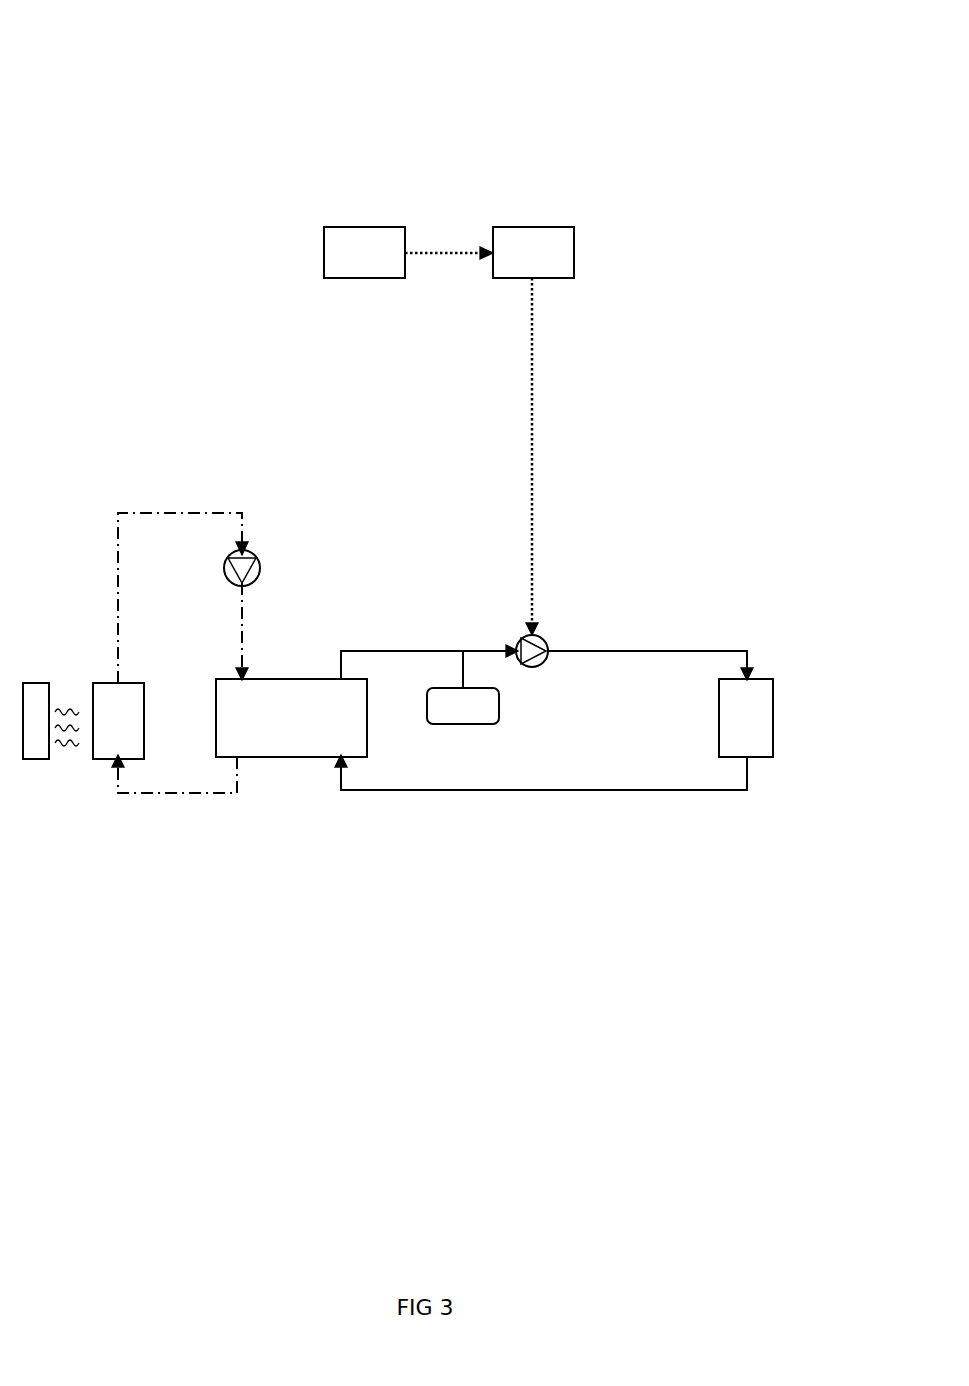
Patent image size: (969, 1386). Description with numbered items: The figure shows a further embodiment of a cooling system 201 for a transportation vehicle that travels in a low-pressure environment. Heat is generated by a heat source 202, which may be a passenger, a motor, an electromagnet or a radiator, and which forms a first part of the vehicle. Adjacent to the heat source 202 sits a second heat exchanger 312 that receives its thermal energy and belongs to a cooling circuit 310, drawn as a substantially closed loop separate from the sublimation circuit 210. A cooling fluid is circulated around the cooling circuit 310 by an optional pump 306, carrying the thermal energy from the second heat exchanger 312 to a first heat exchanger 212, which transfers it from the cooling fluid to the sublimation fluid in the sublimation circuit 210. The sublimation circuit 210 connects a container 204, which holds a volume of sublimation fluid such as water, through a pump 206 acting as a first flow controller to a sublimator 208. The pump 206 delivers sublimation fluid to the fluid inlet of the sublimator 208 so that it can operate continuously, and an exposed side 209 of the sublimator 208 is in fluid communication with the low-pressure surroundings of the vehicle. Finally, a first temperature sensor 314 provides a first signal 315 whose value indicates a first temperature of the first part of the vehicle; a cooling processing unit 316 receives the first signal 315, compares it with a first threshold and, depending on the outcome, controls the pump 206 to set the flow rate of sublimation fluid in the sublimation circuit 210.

The cooling system 201 is at (15, 26).
The heat source 202 is at (51, 816).
The container 204 is at (473, 619).
The pump 206 is at (601, 539).
The sublimator 208 is at (773, 640).
The exposed side 209 is at (829, 668).
The sublimation circuit 210 is at (547, 631).
The first heat exchanger 212 is at (346, 576).
The pump 306 is at (280, 490).
The cooling circuit 310 is at (180, 565).
The second heat exchanger 312 is at (78, 646).
The first temperature sensor 314 is at (310, 252).
The first signal 315 is at (437, 207).
The cooling processing unit 316 is at (572, 413).